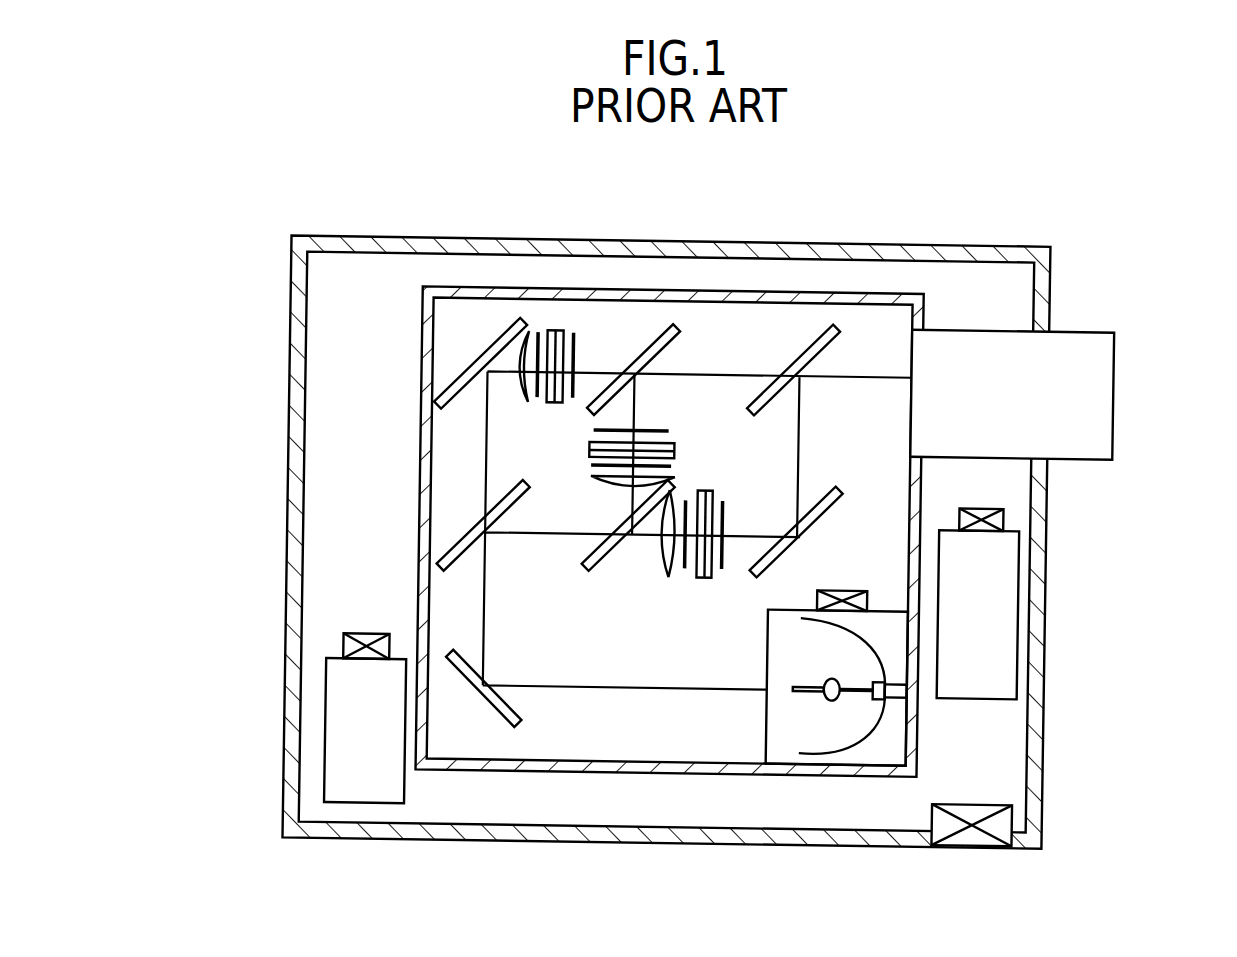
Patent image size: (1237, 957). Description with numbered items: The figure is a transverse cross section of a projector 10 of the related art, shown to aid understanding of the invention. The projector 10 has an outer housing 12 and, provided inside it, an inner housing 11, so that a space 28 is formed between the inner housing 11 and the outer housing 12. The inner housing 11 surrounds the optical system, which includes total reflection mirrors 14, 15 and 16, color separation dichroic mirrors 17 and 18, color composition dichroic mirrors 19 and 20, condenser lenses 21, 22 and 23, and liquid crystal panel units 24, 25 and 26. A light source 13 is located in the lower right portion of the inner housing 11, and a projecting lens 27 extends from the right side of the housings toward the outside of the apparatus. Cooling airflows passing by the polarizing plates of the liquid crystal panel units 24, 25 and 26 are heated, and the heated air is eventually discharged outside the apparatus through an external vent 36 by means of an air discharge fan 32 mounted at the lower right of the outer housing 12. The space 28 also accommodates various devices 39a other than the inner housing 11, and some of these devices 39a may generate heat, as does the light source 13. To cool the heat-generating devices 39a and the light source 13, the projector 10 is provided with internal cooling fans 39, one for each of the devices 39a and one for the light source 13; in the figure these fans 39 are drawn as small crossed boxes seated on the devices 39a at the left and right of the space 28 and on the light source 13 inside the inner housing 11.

The projector 10 is at (943, 128).
The inner housing 11 is at (929, 282).
The outer housing 12 is at (753, 233).
The light source 13 is at (797, 738).
The total reflection mirror 14 is at (513, 715).
The total reflection mirror 15 is at (495, 342).
The total reflection mirror 16 is at (831, 522).
The color separation dichroic mirror 17 is at (470, 562).
The color separation dichroic mirror 18 is at (598, 563).
The color composition dichroic mirror 19 is at (672, 347).
The color composition dichroic mirror 20 is at (832, 346).
The condenser lens 21 is at (522, 397).
The condenser lens 22 is at (614, 482).
The condenser lens 23 is at (656, 574).
The liquid crystal panel unit 24 is at (558, 316).
The liquid crystal panel unit 25 is at (691, 455).
The liquid crystal panel unit 26 is at (708, 601).
The projecting lens 27 is at (1100, 388).
The space 28 is at (358, 320).
The air discharge fan 32 is at (1013, 830).
The external vent 36 is at (1000, 845).
The internal cooling fan 39 is at (838, 590).
The device 39a is at (995, 603).